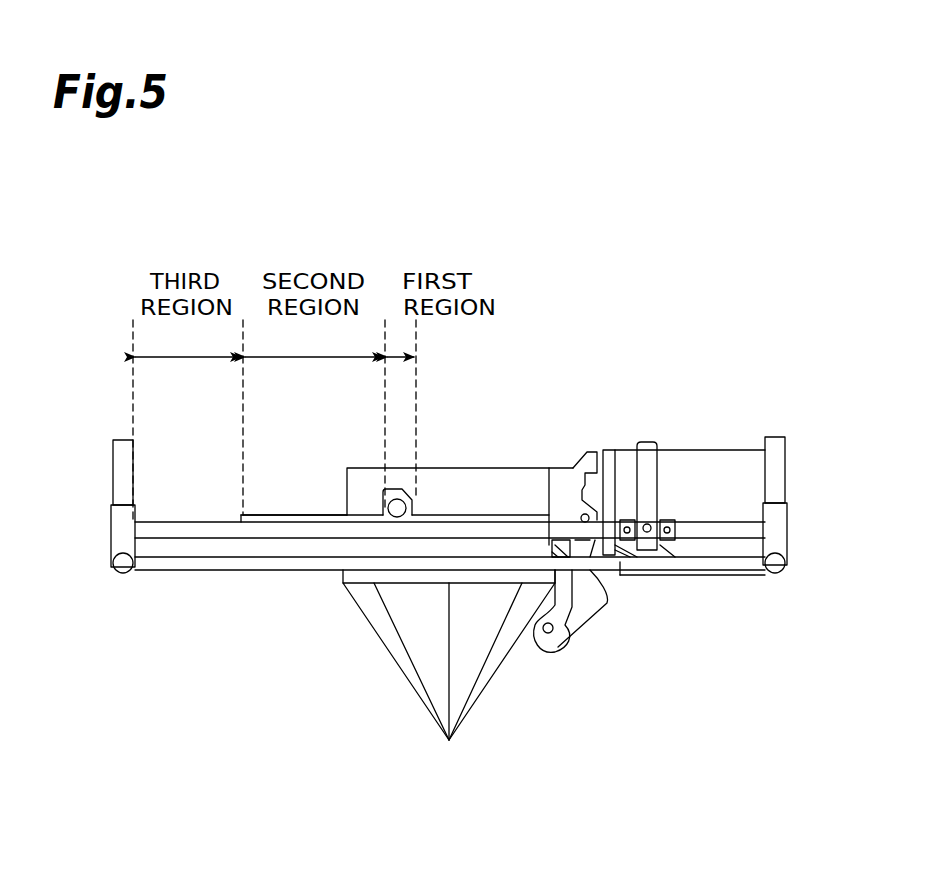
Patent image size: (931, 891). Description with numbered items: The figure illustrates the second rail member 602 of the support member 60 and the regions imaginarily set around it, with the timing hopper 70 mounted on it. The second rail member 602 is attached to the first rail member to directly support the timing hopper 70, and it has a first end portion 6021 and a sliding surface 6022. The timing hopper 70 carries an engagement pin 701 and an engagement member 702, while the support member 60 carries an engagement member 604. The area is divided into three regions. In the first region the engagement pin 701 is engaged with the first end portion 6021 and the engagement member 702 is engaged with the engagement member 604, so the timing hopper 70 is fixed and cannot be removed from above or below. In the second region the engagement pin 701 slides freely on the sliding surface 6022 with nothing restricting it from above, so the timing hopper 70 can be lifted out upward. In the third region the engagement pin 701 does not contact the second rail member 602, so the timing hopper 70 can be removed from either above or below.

The support member 60 is at (238, 578).
The second rail member 602 is at (298, 526).
The sliding surface 6022 is at (292, 513).
The first end portion 6021 is at (395, 489).
The engagement pin 701 is at (384, 508).
The engagement member 702 is at (563, 485).
The engagement member 604 is at (588, 517).
The timing hopper 70 is at (416, 706).